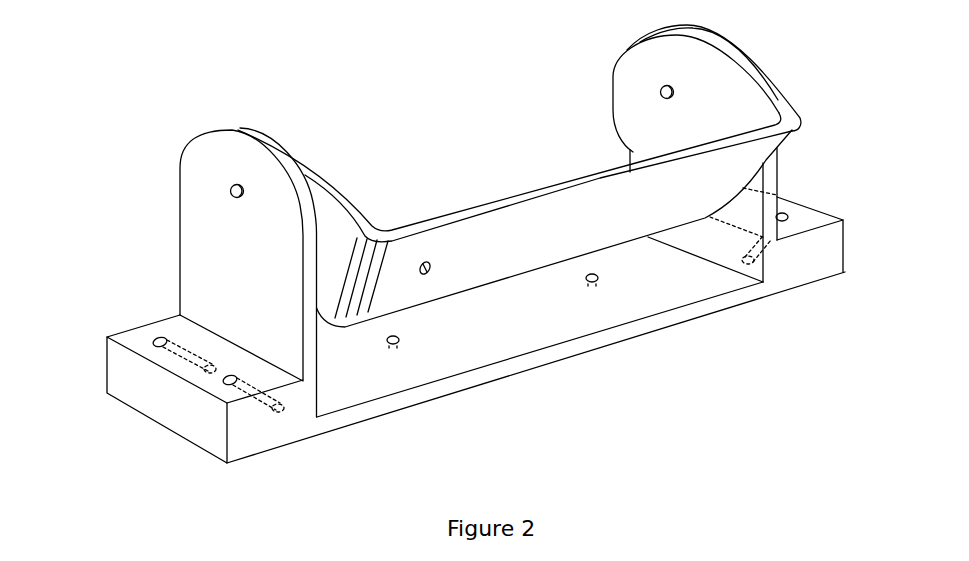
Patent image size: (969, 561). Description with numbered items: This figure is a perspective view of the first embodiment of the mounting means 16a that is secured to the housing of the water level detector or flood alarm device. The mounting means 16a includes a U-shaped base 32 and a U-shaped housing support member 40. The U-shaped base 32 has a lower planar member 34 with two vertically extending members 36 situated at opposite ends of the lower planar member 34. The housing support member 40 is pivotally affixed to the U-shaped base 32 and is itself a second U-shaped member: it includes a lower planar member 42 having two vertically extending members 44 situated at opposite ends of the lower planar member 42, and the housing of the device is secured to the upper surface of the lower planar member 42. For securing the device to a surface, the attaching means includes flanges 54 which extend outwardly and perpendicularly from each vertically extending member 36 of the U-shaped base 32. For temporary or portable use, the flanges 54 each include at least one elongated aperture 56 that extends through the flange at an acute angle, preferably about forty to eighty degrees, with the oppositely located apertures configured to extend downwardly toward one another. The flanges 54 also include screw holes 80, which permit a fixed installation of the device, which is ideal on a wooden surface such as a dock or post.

The mounting means 16a is at (137, 42).
The U-shaped base 32 is at (410, 433).
The lower planar member 34 is at (567, 357).
The vertically extending member 36 is at (213, 235).
The U-shaped housing support member 40 is at (420, 193).
The lower planar member 42 is at (490, 247).
The vertically extending member 44 is at (627, 90).
The flange 54 is at (193, 397).
The elongated aperture 56 is at (157, 340).
The screw hole 80 is at (600, 283).